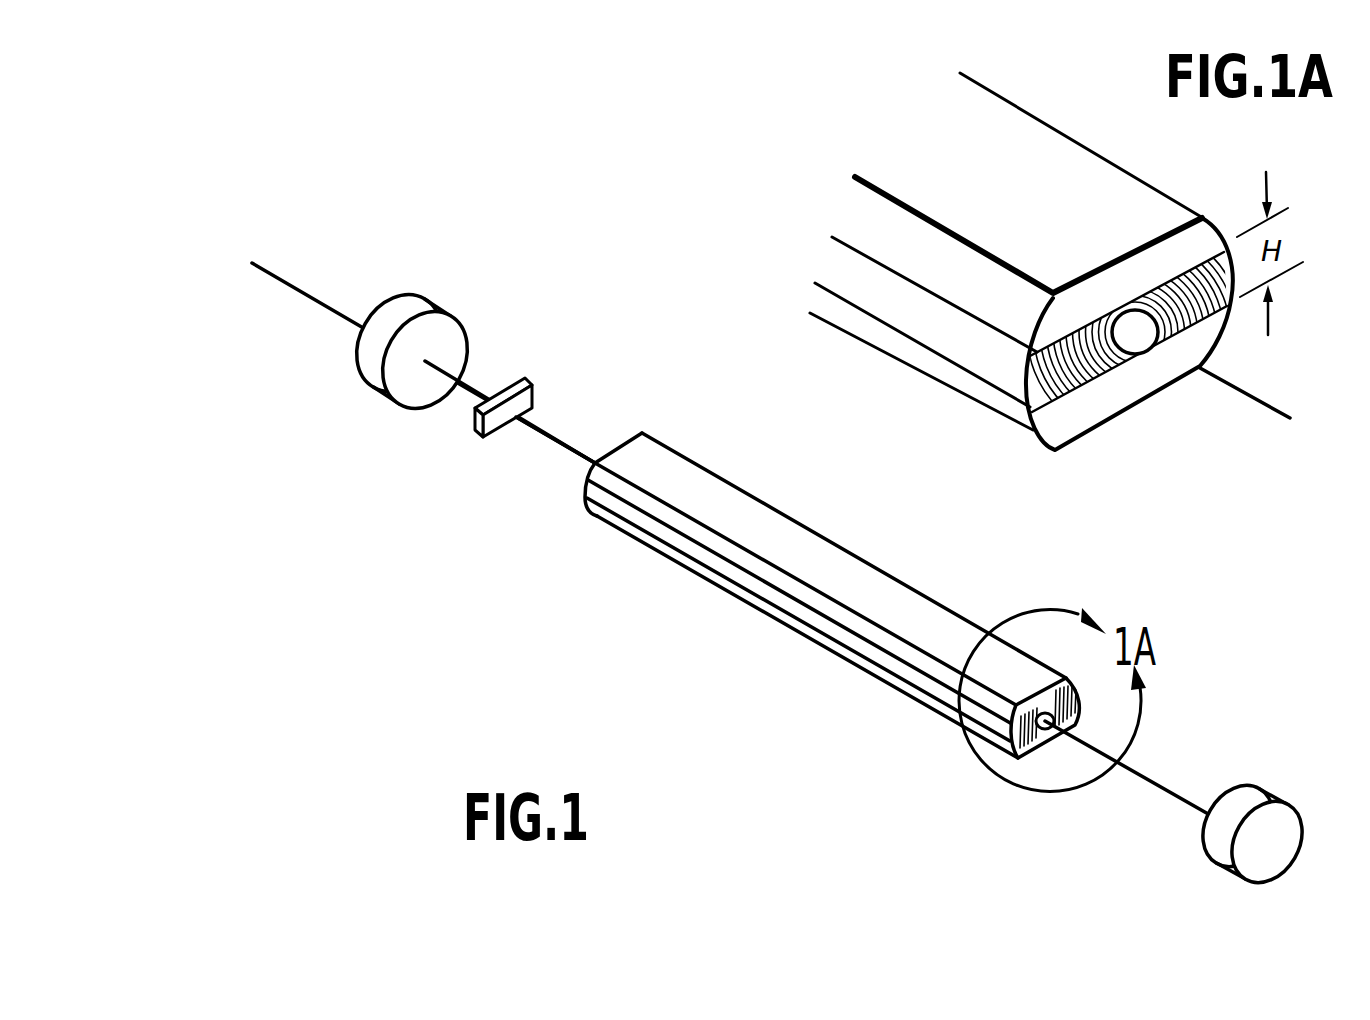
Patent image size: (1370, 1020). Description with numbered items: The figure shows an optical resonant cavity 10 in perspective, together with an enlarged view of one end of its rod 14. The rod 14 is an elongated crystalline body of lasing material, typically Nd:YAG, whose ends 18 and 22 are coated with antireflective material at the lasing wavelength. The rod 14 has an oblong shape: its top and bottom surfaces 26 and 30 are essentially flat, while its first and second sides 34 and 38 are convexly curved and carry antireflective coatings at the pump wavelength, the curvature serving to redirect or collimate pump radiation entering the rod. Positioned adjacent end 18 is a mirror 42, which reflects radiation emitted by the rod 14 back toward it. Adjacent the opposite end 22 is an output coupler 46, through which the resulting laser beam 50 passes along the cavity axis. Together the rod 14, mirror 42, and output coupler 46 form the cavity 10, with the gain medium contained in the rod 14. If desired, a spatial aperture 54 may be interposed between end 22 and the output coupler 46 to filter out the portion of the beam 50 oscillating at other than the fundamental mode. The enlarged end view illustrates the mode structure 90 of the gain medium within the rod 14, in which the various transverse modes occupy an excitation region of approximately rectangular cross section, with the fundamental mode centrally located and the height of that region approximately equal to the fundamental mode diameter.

In FIG. 1, the optical resonant cavity 10 is at (868, 760).
In FIG. 1, the rod 14 is at (765, 619).
In FIG. 1A, the rod 14 is at (1007, 267).
In FIG. 1, the end 18 is at (1043, 750).
In FIG. 1, the end 22 is at (577, 488).
In FIG. 1, the top surface 26 is at (820, 568).
In FIG. 1A, the top surface 26 is at (1048, 157).
In FIG. 1, the bottom surface 30 is at (845, 658).
In FIG. 1A, the first side 34 is at (1033, 423).
In FIG. 1A, the second side 38 is at (1217, 217).
In FIG. 1, the mirror 42 is at (1221, 843).
In FIG. 1, the output coupler 46 is at (373, 365).
In FIG. 1, the laser beam 50 is at (323, 305).
In FIG. 1, the spatial aperture 54 is at (473, 431).
In FIG. 1, the mode structure 90 is at (1045, 721).
In FIG. 1A, the mode structure 90 is at (1037, 312).